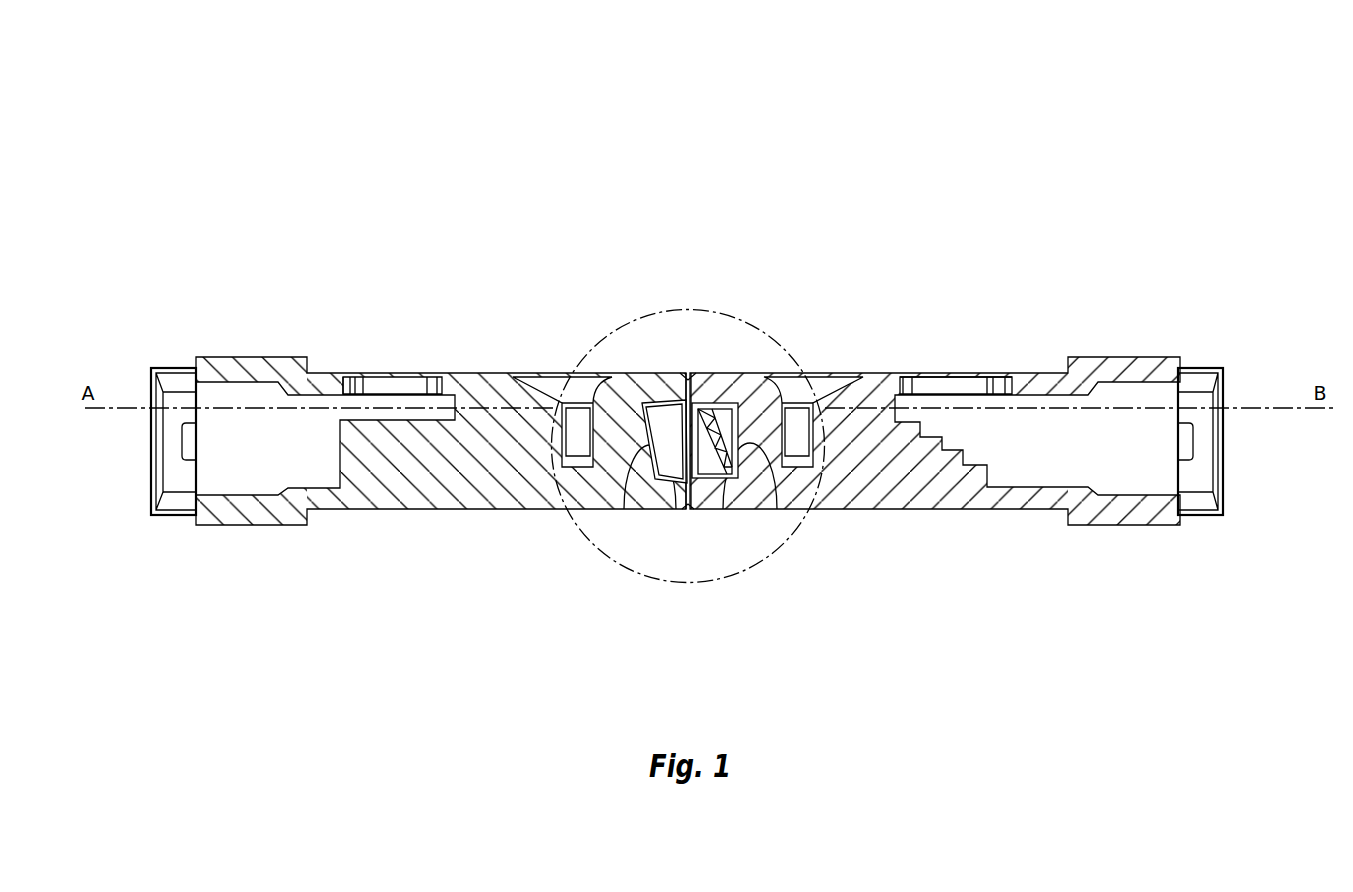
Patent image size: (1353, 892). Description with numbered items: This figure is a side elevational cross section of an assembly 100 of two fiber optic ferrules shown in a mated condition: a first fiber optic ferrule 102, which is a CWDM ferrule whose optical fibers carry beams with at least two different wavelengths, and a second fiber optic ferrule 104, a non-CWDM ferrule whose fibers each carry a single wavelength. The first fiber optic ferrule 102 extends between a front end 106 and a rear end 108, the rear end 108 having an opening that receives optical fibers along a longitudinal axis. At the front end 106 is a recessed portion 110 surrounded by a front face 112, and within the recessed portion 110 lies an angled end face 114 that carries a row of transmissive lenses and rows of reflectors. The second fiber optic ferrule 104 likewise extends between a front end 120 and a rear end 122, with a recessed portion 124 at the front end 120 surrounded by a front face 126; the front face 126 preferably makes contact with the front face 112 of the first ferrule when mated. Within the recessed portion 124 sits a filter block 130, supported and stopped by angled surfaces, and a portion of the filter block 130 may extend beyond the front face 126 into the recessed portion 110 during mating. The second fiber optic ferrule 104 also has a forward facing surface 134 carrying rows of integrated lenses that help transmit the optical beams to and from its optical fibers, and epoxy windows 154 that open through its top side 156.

The assembly of two fiber optic ferrules 100 is at (952, 197).
The first fiber optic ferrule 102 is at (478, 511).
The second fiber optic ferrule 104 is at (1026, 511).
The front end 106 is at (678, 336).
The rear end 108 is at (131, 520).
The recessed portion 110 is at (673, 481).
The front face 112 is at (684, 400).
The angled end face 114 is at (624, 509).
The front end 120 is at (709, 356).
The rear end 122 is at (1231, 390).
The recessed portion 124 is at (723, 480).
The front face 126 is at (692, 402).
The filter block 130 is at (697, 488).
The forward facing surface 134 is at (777, 509).
The epoxy windows 154 is at (958, 372).
The top side 156 is at (1037, 372).